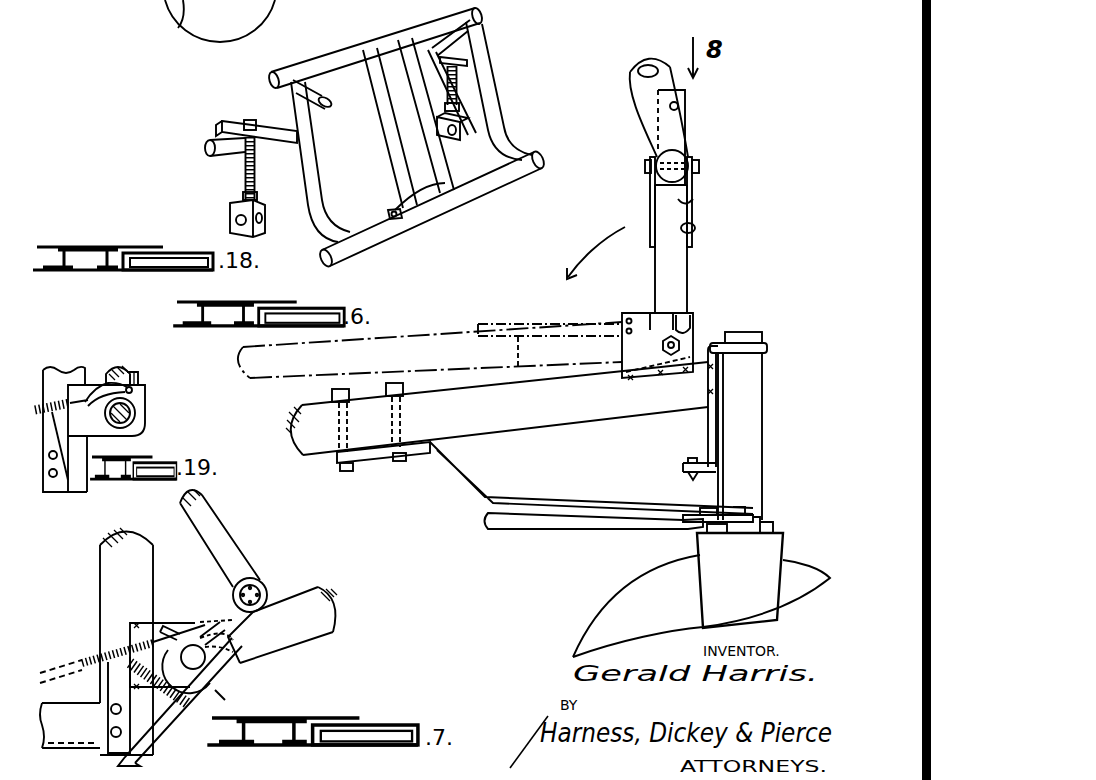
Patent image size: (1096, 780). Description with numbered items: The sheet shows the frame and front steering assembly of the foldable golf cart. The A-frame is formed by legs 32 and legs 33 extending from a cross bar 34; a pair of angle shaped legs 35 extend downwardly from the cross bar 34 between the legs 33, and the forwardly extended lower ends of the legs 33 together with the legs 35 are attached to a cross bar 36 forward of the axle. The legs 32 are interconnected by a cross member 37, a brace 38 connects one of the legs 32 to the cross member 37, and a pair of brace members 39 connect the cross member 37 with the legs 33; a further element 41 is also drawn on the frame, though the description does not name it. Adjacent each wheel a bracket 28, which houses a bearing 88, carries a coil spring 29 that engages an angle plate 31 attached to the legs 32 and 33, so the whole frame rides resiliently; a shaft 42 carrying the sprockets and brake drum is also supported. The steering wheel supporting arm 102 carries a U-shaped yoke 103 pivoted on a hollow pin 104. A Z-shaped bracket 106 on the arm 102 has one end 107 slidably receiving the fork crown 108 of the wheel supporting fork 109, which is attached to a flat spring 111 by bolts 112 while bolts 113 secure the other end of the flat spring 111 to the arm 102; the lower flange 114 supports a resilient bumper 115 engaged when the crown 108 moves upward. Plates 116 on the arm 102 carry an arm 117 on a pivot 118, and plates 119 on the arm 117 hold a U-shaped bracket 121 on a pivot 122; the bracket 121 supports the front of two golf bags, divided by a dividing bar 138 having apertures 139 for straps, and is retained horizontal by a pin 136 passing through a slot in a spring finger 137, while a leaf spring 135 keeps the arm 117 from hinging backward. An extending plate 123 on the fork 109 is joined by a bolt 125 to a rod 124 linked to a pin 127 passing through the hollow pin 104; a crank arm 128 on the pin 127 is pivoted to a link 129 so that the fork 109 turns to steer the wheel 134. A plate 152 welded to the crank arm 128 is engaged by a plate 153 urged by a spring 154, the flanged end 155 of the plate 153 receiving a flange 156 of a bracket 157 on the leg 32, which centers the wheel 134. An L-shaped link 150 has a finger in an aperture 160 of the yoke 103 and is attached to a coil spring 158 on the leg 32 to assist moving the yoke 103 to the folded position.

In FIG. 18, the bracket 28 is at (230, 218).
In FIG. 18, the coil spring 29 is at (248, 172).
In FIG. 18, the angle plate 31 is at (225, 127).
In FIG. 18, the leg 32 is at (446, 30).
In FIG. 7, the leg 32 is at (65, 737).
In FIG. 18, the leg 33 is at (478, 40).
In FIG. 18, the cross bar 34 is at (334, 60).
In FIG. 18, the angle shaped leg 35 is at (382, 176).
In FIG. 18, the cross bar 36 is at (352, 252).
In FIG. 18, the cross member 37 is at (206, 149).
In FIG. 18, the brace 38 is at (316, 115).
In FIG. 18, the brace member 39 is at (243, 193).
In FIG. 18, the plate 41 is at (392, 212).
In FIG. 18, the shaft 42 is at (428, 200).
In FIG. 18, the bearing 88 is at (245, 233).
In FIG. 6, the steering wheel supporting arm 102 is at (525, 418).
In FIG. 19, the steering wheel supporting arm 102 is at (142, 360).
In FIG. 7, the steering wheel supporting arm 102 is at (320, 590).
In FIG. 7, the U-shaped yoke 103 is at (253, 633).
In FIG. 19, the hollow pin 104 is at (137, 418).
In FIG. 7, the hollow pin 104 is at (182, 647).
In FIG. 6, the Z-shaped bracket 106 is at (708, 420).
In FIG. 6, the end of bracket 107 is at (767, 334).
In FIG. 6, the fork crown 108 is at (750, 394).
In FIG. 6, the wheel supporting fork 109 is at (768, 582).
In FIG. 6, the flat spring 111 is at (588, 478).
In FIG. 6, the bolt 112 is at (757, 515).
In FIG. 6, the bolt 113 is at (400, 464).
In FIG. 6, the lower flange 114 is at (686, 467).
In FIG. 6, the resilient bumper 115 is at (686, 476).
In FIG. 6, the plate 116 is at (688, 340).
In FIG. 6, the arm 117 is at (688, 258).
In FIG. 6, the pivot 118 is at (688, 318).
In FIG. 6, the plate 119 is at (694, 188).
In FIG. 6, the U-shaped bracket 121 is at (672, 125).
In FIG. 6, the pivot 122 is at (702, 158).
In FIG. 6, the extending plate 123 is at (703, 528).
In FIG. 6, the rod 124 is at (607, 525).
In FIG. 6, the bolt 125 is at (718, 504).
In FIG. 7, the pin 127 is at (192, 627).
In FIG. 7, the crank arm 128 is at (240, 575).
In FIG. 7, the link 129 is at (222, 540).
In FIG. 6, the wheel 134 is at (625, 608).
In FIG. 6, the leaf spring 135 is at (640, 313).
In FIG. 6, the pin 136 is at (647, 170).
In FIG. 6, the spring finger 137 is at (698, 158).
In FIG. 6, the dividing bar 138 is at (679, 87).
In FIG. 6, the aperture 139 is at (650, 64).
In FIG. 19, the L-shaped link 150 is at (90, 400).
In FIG. 7, the L-shaped link 150 is at (197, 637).
In FIG. 7, the plate 152 is at (192, 681).
In FIG. 7, the plate 153 is at (215, 695).
In FIG. 7, the spring 154 is at (123, 653).
In FIG. 7, the flanged end 155 is at (122, 760).
In FIG. 7, the flange 156 is at (163, 720).
In FIG. 7, the bracket 157 is at (104, 706).
In FIG. 19, the coil spring 158 is at (55, 372).
In FIG. 7, the coil spring 158 is at (127, 665).
In FIG. 19, the aperture 160 is at (134, 385).